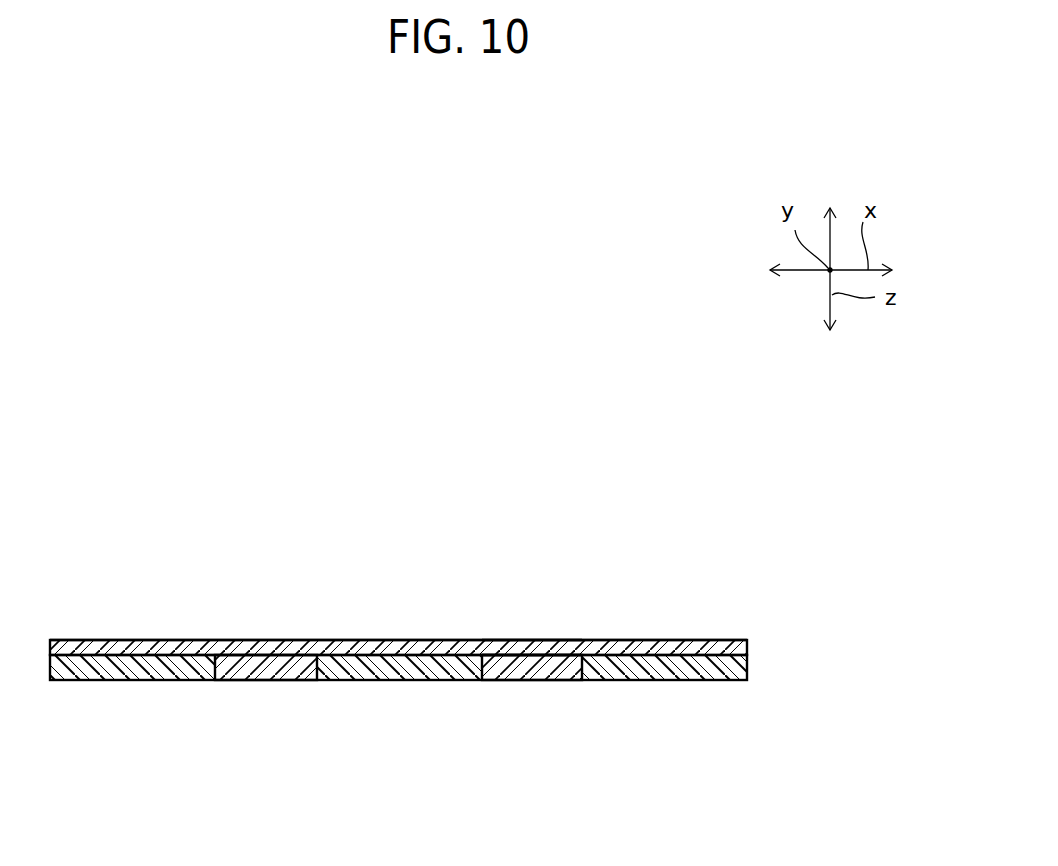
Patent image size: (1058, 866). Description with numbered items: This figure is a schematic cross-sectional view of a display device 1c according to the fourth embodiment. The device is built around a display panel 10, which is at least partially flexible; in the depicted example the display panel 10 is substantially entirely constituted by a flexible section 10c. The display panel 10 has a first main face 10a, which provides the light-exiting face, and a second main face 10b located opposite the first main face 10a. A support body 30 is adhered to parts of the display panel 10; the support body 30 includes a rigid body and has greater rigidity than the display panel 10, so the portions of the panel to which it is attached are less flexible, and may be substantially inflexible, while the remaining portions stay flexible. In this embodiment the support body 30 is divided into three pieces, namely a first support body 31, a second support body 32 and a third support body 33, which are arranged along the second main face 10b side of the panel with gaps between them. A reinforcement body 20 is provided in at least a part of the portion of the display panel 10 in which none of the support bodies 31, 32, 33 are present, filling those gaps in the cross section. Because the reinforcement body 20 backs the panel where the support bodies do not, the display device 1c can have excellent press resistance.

The display device 1c is at (640, 572).
The display panel 10 is at (468, 656).
The first main face 10a is at (450, 640).
The second main face 10b is at (500, 657).
The flexible section 10c is at (532, 640).
The reinforcement body 20 is at (270, 680).
The support body 30 is at (468, 738).
The first support body 31 is at (200, 680).
The second support body 32 is at (395, 680).
The third support body 33 is at (617, 680).